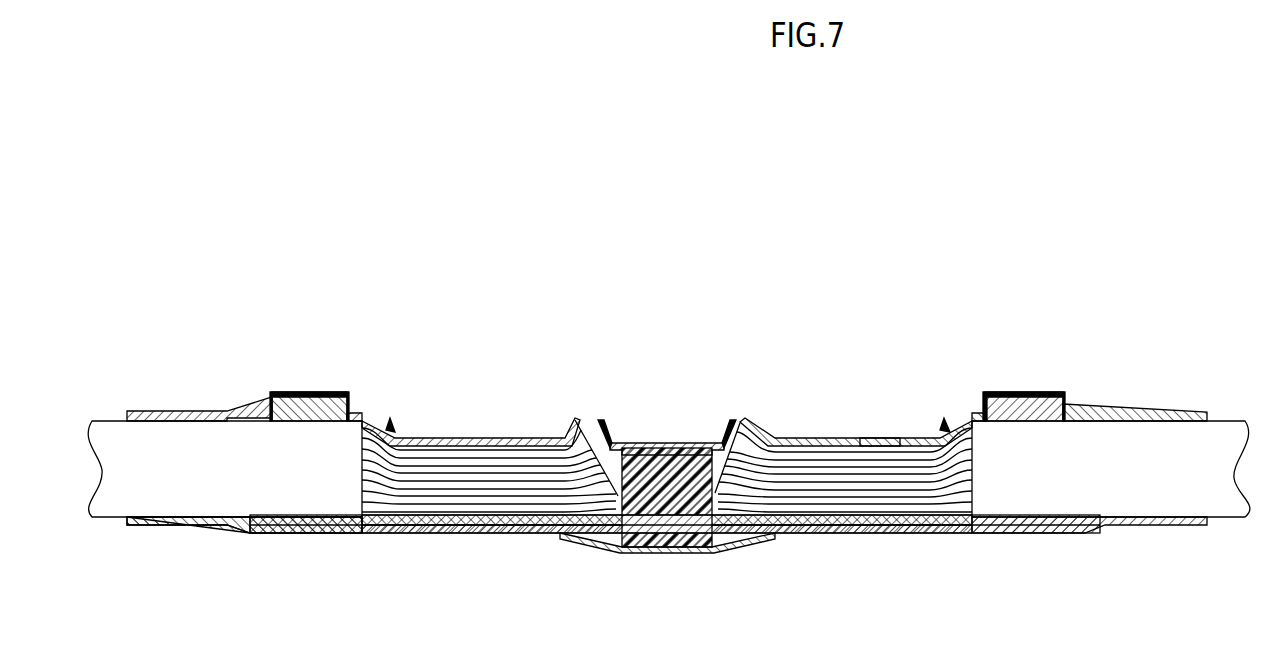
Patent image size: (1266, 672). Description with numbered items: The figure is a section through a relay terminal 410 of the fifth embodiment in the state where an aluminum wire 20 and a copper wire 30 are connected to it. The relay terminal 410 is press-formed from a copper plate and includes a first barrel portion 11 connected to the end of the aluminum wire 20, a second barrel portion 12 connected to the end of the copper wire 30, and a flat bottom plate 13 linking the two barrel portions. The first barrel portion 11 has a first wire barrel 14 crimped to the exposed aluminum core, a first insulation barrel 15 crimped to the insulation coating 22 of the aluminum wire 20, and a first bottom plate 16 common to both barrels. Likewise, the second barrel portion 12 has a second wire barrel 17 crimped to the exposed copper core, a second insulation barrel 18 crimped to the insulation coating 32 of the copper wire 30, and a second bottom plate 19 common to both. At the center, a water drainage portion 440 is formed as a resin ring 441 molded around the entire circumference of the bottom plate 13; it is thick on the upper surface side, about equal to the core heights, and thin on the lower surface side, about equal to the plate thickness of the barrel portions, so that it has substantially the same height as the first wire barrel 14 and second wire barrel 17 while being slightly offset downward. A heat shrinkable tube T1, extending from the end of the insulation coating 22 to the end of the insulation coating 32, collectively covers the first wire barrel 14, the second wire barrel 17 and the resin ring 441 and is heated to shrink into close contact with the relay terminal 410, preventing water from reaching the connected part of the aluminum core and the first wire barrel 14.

The relay terminal 410 is at (698, 262).
The copper wire 30 is at (108, 519).
The insulation coating 32 is at (163, 445).
The second insulation barrel 18 is at (305, 400).
The second wire barrel 17 is at (488, 425).
The resin ring 441 is at (657, 452).
The water drainage portion 440 is at (667, 453).
The first wire barrel 14 is at (847, 422).
The heat shrinkable tube T1 is at (883, 422).
The first insulation barrel 15 is at (1020, 400).
The insulation coating 22 is at (1086, 450).
The aluminum wire 20 is at (1220, 519).
The first barrel portion 11 is at (922, 535).
The second barrel portion 12 is at (503, 520).
The second bottom plate 19 is at (437, 522).
The first bottom plate 16 is at (860, 522).
The bottom plate 13 is at (655, 522).